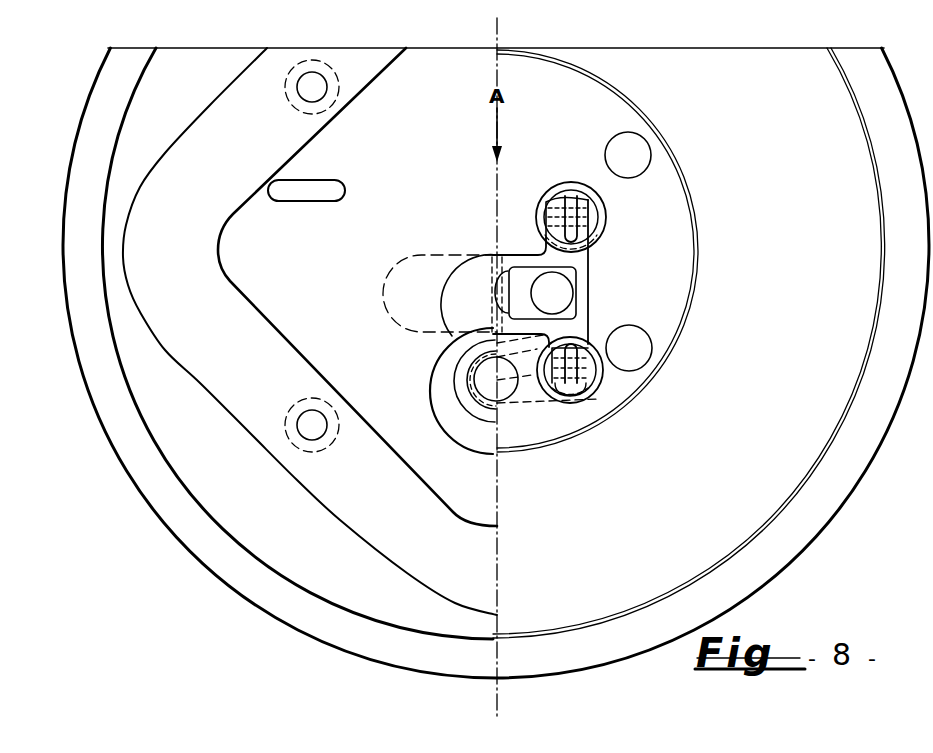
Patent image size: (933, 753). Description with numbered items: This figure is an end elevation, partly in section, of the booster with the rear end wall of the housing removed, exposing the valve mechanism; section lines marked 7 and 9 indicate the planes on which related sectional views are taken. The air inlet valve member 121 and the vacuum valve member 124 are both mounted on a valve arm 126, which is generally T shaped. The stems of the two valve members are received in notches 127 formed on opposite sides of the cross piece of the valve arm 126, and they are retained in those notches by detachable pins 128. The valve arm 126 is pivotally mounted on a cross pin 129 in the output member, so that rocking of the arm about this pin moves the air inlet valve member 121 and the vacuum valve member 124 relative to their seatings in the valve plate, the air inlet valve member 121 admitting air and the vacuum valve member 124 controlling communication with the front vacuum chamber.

The section line 7- 7 is at (486, 32).
The section line 9- 9 is at (438, 392).
The air inlet valve member 121 is at (575, 401).
The vacuum valve member 124 is at (590, 207).
The valve arm 126 is at (522, 256).
The notches 127 is at (545, 238).
The detachable pins 128 is at (600, 220).
The cross pin 129 is at (497, 286).